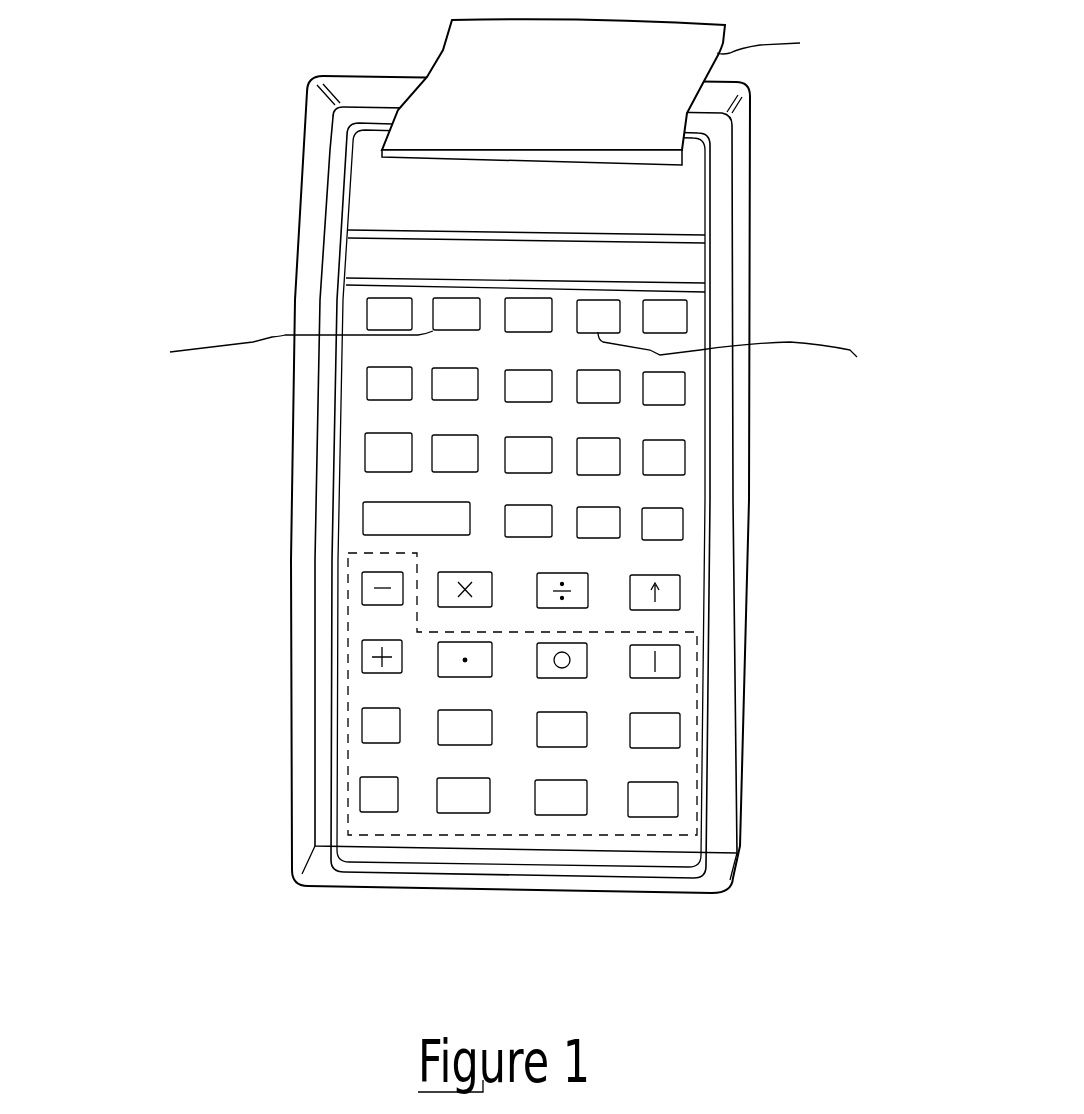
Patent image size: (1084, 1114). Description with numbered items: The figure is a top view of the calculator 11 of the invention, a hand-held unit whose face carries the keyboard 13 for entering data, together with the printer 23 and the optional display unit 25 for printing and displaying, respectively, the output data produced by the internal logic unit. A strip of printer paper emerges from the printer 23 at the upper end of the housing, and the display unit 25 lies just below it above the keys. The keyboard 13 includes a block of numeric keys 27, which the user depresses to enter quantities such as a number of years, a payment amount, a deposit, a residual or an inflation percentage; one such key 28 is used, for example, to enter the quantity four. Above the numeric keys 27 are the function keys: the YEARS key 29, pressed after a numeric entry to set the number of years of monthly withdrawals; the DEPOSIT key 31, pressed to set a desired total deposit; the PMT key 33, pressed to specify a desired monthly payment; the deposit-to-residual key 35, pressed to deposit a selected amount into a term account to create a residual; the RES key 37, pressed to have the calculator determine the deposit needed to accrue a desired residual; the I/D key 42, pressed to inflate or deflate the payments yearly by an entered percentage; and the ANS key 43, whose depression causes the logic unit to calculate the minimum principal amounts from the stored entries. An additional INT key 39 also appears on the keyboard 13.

The calculator 11 is at (516, 489).
The keyboard 13 is at (717, 573).
The printer 23 is at (698, 195).
The display unit 25 is at (418, 254).
The numeric keys 27 is at (348, 600).
The key 28 is at (570, 711).
The YEARS key 29 is at (412, 298).
The DEPOSIT key 31 is at (477, 298).
The PMT key 33 is at (548, 298).
The deposit-to-residual key 35 is at (608, 300).
The RES key 37 is at (687, 312).
The interest key 39 is at (363, 382).
The inflation/deflation (I/D) key 42 is at (607, 405).
The ANS key 43 is at (685, 380).